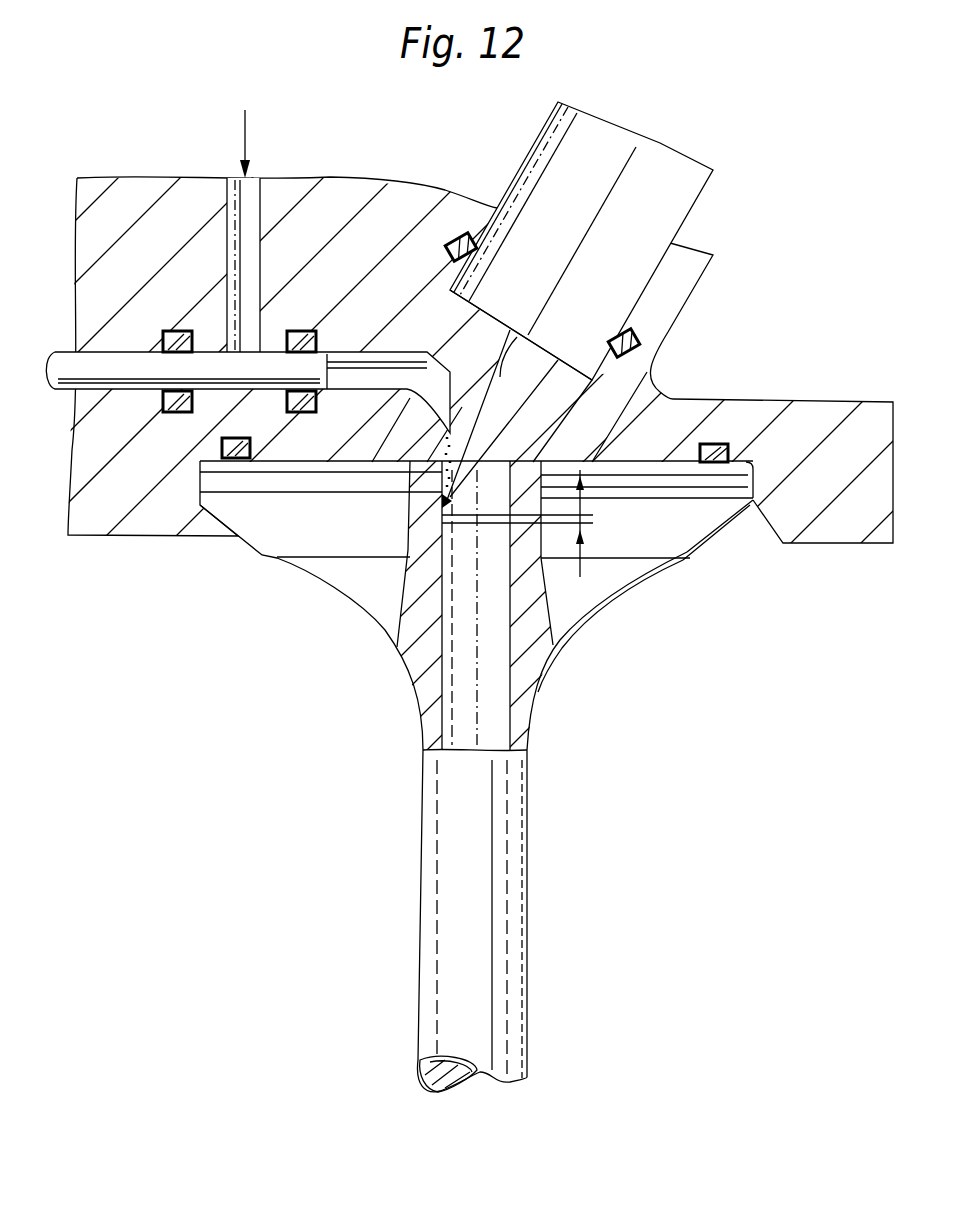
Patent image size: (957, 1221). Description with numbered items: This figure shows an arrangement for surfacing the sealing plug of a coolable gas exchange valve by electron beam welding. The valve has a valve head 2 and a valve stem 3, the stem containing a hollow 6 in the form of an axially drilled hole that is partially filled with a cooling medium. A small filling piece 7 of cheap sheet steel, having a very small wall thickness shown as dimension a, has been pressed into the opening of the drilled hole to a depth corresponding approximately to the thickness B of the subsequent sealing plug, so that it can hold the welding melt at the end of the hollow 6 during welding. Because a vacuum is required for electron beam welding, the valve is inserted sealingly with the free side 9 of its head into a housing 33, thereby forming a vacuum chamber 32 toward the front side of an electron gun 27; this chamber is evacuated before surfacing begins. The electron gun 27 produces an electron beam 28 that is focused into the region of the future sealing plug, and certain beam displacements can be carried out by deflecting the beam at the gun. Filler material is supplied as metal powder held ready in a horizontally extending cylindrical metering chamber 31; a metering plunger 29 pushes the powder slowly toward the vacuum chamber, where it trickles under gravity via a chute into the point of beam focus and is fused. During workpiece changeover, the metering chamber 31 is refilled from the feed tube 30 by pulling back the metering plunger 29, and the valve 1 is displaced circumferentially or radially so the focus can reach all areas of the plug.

The cable 1 is at (535, 937).
The valve head 2 is at (331, 537).
The valve stem 3 is at (477, 845).
The hollow 6 is at (493, 663).
The filling piece 7 is at (480, 520).
The free side of the head 9 is at (697, 399).
The electron gun 27 is at (700, 207).
The electron beam 28 is at (513, 332).
The metering plunger 29 is at (138, 372).
The feed tube 30 is at (253, 223).
The metering chamber 31 is at (347, 377).
The vacuum chamber 32 is at (576, 368).
The housing 33 is at (810, 401).
The wall thickness of the filling piece a is at (593, 523).
The thickness of the sealing plug B is at (672, 560).